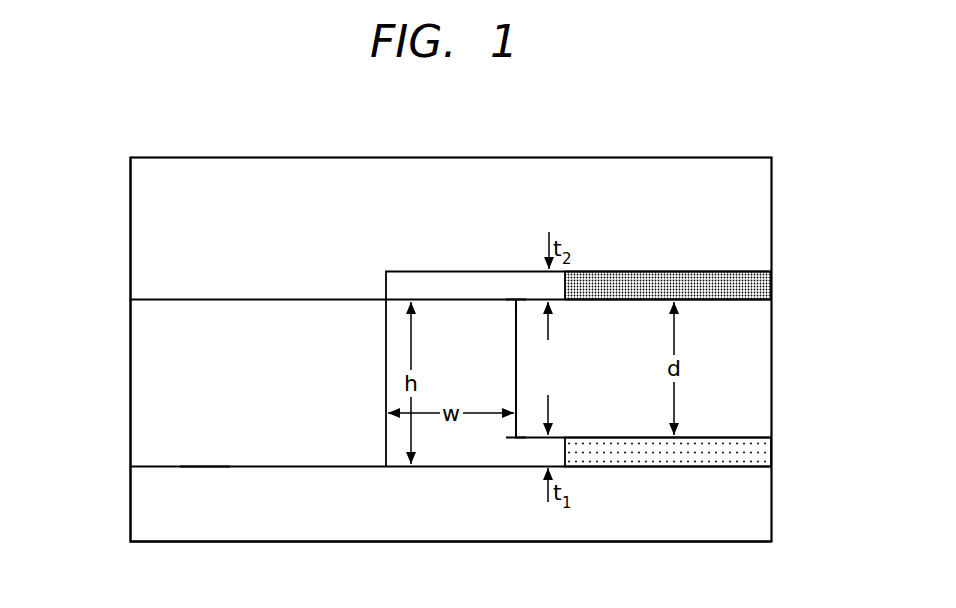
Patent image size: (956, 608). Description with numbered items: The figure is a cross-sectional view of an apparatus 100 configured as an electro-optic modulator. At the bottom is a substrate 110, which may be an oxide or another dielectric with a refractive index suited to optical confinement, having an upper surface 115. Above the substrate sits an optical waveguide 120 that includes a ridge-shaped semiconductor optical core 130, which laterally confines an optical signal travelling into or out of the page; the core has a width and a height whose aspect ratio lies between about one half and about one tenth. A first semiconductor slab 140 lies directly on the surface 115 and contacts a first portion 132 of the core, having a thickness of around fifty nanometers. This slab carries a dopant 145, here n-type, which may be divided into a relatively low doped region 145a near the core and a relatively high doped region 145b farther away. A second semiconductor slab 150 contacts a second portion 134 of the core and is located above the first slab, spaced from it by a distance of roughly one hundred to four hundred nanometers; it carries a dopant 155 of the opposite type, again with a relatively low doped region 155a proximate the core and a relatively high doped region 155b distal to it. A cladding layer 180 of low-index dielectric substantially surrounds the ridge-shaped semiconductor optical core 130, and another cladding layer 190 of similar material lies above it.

The apparatus 100 is at (708, 124).
The substrate 110 is at (130, 507).
The surface 115 is at (213, 456).
The optical waveguide 120 is at (364, 373).
The ridge-shaped semiconductor optical core 130 is at (522, 363).
The first portion 132 is at (510, 441).
The second portion 134 is at (510, 294).
The first semiconductor slab 140 is at (778, 453).
The dopant 145 is at (652, 467).
The relatively low doped region 145a is at (572, 454).
The relatively high doped region 145b is at (705, 452).
The second semiconductor slab 150 is at (778, 288).
The dopant 155 is at (655, 284).
The relatively low doped region 155a is at (572, 284).
The relatively high doped region 155b is at (704, 284).
The cladding layer 180 is at (130, 379).
The cladding layer 190 is at (130, 224).